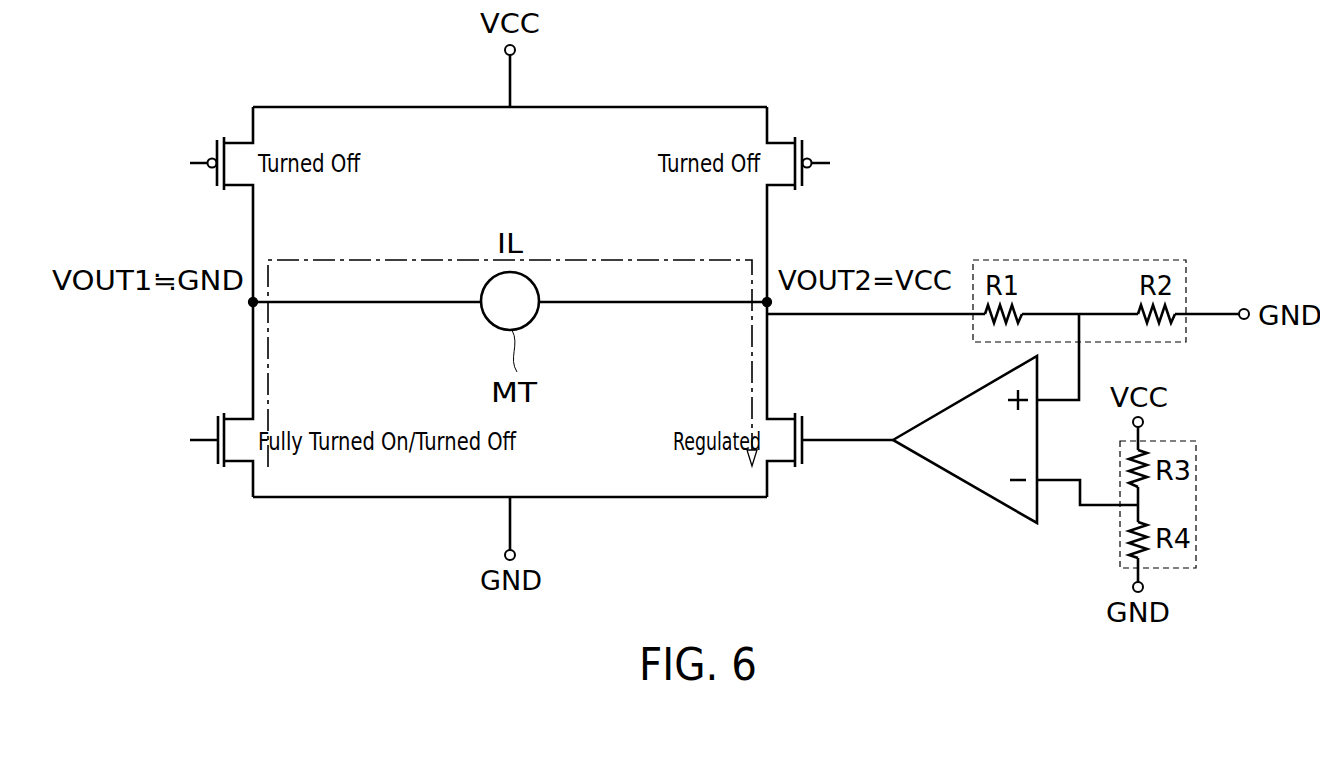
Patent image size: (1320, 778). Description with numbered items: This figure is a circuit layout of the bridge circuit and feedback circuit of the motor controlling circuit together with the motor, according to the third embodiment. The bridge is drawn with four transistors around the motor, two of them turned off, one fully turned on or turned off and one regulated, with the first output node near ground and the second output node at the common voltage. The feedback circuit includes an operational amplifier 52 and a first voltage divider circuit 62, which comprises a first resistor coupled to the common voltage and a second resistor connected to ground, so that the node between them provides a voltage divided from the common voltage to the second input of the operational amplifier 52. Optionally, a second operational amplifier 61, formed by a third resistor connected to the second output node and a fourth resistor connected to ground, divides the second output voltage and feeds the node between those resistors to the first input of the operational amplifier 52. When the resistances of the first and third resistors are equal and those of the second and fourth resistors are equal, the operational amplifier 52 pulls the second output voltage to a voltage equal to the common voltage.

The operational amplifier 52 is at (965, 485).
The second operational amplifier 61 is at (1080, 260).
The first voltage divider circuit 62 is at (1198, 495).